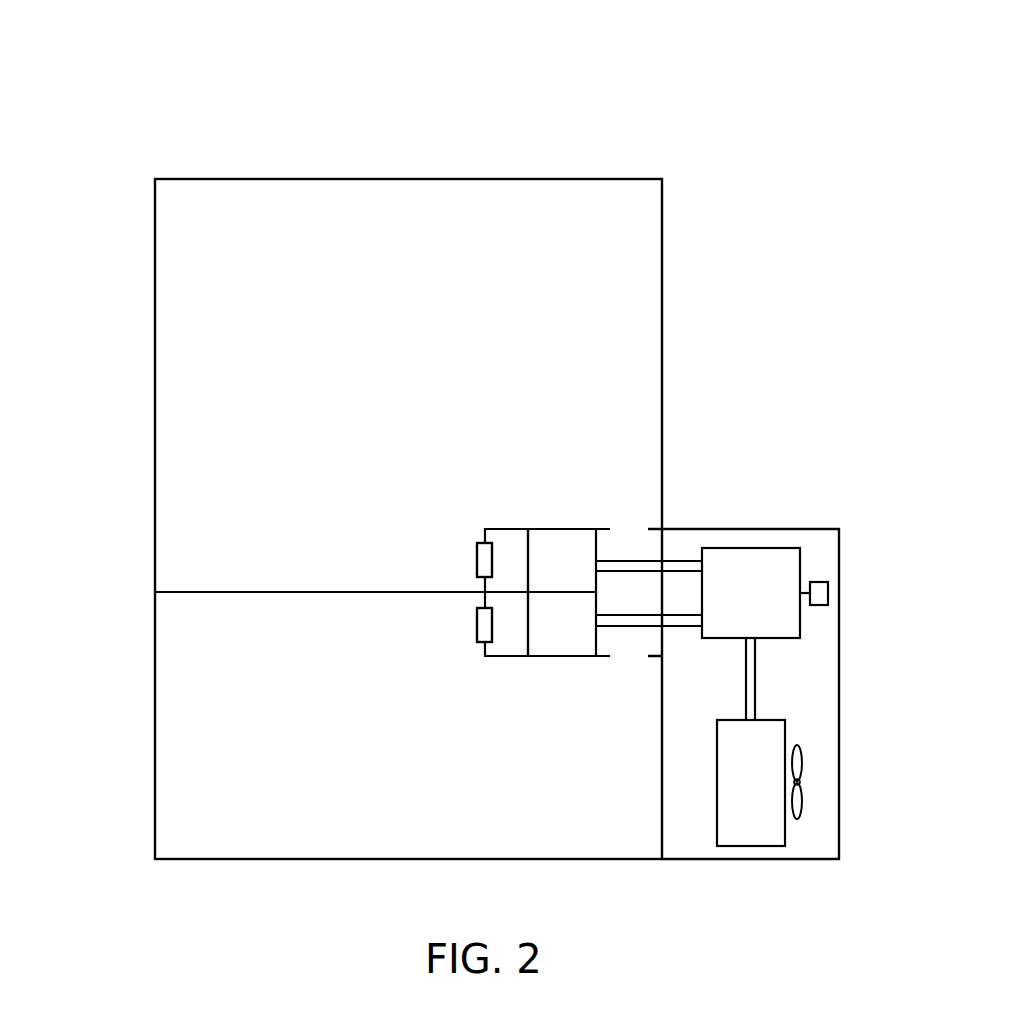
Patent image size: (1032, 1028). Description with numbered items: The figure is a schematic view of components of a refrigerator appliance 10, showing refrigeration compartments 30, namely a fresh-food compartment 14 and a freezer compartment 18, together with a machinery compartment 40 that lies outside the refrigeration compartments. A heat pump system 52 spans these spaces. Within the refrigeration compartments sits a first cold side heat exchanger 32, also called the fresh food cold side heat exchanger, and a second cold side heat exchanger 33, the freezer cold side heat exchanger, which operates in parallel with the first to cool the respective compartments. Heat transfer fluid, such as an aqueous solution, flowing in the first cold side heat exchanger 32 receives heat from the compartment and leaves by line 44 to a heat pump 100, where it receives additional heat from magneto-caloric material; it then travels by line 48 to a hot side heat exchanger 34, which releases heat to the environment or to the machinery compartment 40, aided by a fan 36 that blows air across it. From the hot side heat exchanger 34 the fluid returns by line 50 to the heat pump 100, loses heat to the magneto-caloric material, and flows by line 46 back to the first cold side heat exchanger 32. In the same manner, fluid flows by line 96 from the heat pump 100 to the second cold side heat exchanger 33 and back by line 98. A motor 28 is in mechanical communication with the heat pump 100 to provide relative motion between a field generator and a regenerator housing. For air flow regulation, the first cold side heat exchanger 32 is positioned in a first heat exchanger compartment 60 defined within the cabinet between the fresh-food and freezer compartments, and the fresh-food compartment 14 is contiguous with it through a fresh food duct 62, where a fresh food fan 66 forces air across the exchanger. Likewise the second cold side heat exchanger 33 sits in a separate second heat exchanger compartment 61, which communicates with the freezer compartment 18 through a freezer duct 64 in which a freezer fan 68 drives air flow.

The refrigerator appliance 10 is at (745, 69).
The fresh-food compartment 14 is at (648, 271).
The freezer compartment 18 is at (172, 792).
The motor 28 is at (820, 592).
The refrigeration compartment 30 is at (268, 196).
The first cold side heat exchanger 32 is at (553, 560).
The second cold side heat exchanger 33 is at (573, 630).
The hot side heat exchanger 34 is at (750, 822).
The fan 36 is at (802, 782).
The machinery compartment 40 is at (822, 662).
The line 44 is at (671, 558).
The line 46 is at (654, 568).
The line 48 is at (745, 700).
The line 50 is at (757, 700).
The heat pump system 52 is at (821, 537).
The first heat exchanger compartment 60 is at (506, 535).
The second heat exchanger compartment 61 is at (504, 638).
The fresh food duct 62 is at (476, 530).
The freezer duct 64 is at (472, 660).
The fresh food fan 66 is at (477, 560).
The freezer fan 68 is at (477, 628).
The line 96 is at (681, 630).
The line 98 is at (673, 613).
The heat pump 100 is at (742, 570).